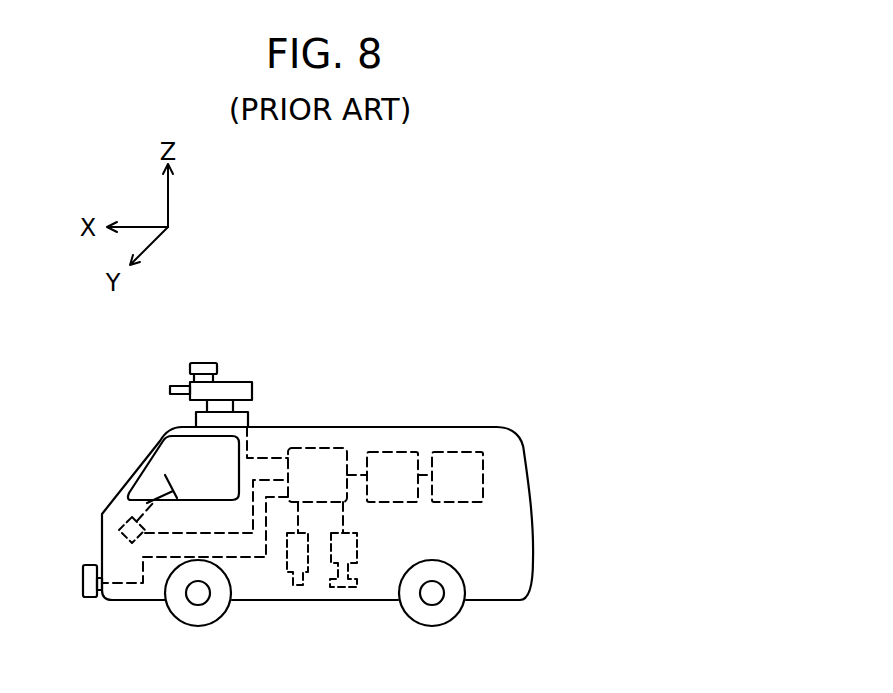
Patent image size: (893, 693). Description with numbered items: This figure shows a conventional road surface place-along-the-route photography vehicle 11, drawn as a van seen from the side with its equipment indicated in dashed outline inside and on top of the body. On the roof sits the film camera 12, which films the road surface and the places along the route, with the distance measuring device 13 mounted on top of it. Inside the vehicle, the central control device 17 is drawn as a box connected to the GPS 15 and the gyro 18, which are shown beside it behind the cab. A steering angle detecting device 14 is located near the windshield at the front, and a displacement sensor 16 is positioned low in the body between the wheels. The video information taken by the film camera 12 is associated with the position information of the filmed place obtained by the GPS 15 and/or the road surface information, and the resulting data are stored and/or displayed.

The road surface place-along-the-route photography vehicle 11 is at (477, 378).
The film camera 12 is at (233, 382).
The distance measuring device 13 is at (205, 362).
The steering angle detecting device 14 is at (130, 527).
The GPS 15 is at (387, 452).
The displacement sensor 16 is at (340, 548).
The central control device 17 is at (330, 448).
The gyro 18 is at (468, 470).